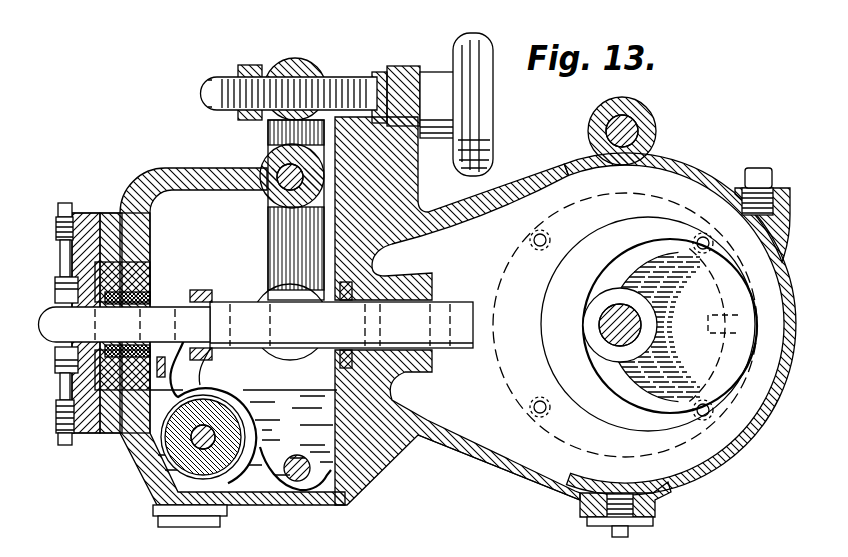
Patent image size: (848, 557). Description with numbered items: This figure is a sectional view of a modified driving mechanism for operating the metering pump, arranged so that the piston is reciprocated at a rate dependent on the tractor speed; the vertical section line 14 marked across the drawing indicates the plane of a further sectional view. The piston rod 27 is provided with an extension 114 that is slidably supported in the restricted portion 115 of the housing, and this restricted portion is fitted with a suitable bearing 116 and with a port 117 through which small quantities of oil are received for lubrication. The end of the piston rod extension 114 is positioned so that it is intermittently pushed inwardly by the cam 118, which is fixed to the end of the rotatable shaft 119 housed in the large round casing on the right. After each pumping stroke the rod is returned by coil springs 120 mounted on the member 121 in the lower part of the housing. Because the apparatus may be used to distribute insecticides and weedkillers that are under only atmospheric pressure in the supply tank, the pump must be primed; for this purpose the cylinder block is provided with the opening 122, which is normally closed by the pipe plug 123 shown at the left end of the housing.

The section line 14- 14 is at (333, 530).
The piston rod 27 is at (132, 322).
The extension 114 is at (237, 308).
The restricted portion 115 is at (380, 374).
The bearing 116 is at (398, 455).
The port 117 is at (393, 277).
The cam 118 is at (738, 397).
The rotatable shaft 119 is at (610, 328).
The coil springs 120 is at (228, 480).
The member 121 is at (187, 452).
The opening 122 is at (82, 212).
The pipe plug 123 is at (80, 212).